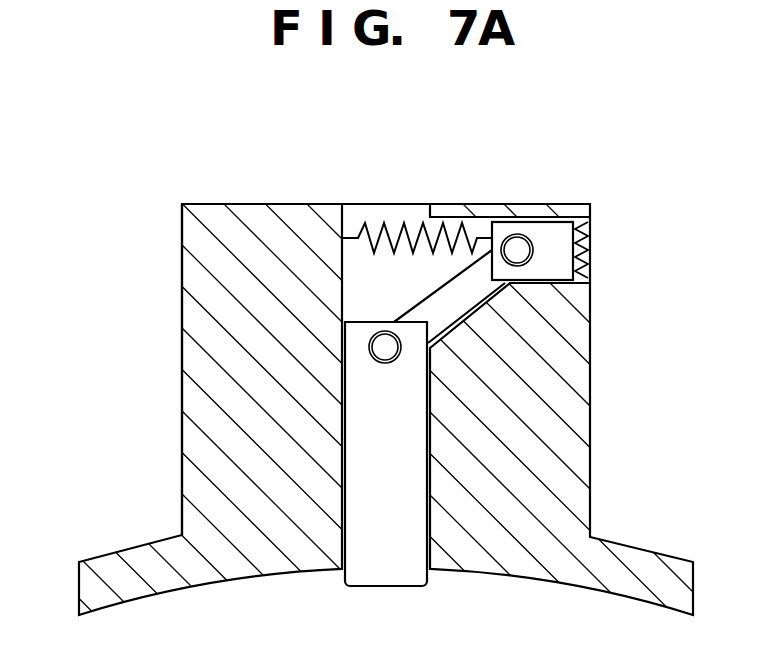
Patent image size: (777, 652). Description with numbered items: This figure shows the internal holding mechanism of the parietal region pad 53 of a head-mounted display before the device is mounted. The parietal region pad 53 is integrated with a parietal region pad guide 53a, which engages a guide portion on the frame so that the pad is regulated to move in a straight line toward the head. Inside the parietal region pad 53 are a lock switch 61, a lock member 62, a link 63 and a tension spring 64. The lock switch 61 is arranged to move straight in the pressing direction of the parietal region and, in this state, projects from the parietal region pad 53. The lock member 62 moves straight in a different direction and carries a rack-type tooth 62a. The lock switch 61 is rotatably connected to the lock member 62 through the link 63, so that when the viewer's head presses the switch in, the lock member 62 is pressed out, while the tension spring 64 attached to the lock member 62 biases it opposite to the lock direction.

The parietal region pad 53 is at (147, 373).
The parietal region pad guide 53a is at (182, 252).
The lock switch 61 is at (380, 570).
The lock member 62 is at (568, 278).
The rack-type tooth 62a is at (579, 238).
The link 63 is at (460, 297).
The tension spring 64 is at (369, 234).